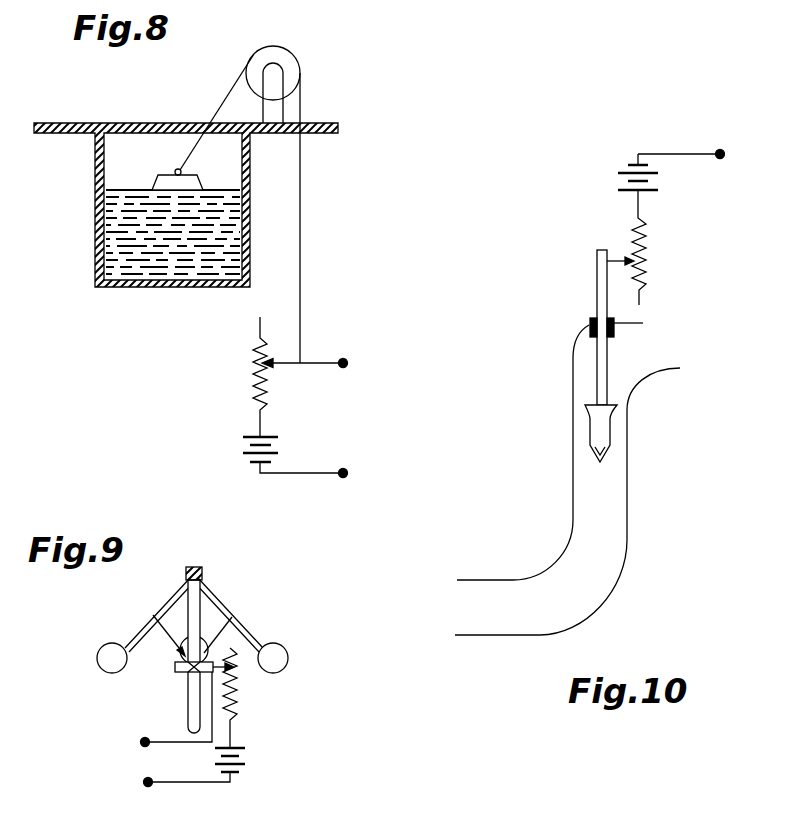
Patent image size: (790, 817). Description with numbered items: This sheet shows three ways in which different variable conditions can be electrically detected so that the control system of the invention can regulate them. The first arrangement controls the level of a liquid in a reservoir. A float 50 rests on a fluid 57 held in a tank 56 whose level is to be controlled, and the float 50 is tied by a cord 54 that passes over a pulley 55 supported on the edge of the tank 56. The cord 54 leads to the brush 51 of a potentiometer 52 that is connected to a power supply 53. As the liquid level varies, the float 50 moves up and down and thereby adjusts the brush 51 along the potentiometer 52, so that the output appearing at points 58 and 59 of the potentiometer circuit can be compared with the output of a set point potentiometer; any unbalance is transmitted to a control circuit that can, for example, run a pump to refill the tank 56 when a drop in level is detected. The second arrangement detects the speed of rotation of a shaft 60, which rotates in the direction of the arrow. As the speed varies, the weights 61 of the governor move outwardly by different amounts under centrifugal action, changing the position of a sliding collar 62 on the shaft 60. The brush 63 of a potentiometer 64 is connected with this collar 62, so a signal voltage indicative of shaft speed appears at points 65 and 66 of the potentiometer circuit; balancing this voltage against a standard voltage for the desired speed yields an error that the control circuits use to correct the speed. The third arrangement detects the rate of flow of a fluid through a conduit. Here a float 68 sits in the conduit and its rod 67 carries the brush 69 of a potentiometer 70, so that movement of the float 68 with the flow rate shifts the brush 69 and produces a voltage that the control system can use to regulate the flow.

In FIG. 8, the float 50 is at (164, 172).
In FIG. 8, the brush 51 is at (313, 363).
In FIG. 8, the potentiometer 52 is at (258, 362).
In FIG. 8, the power supply 53 is at (249, 446).
In FIG. 8, the cord 54 is at (301, 207).
In FIG. 8, the pulley 55 is at (289, 50).
In FIG. 8, the tank 56 is at (95, 180).
In FIG. 8, the fluid 57 is at (145, 265).
In FIG. 8, the point 58 is at (345, 361).
In FIG. 8, the point 59 is at (344, 472).
In FIG. 9, the shaft 60 is at (186, 700).
In FIG. 9, the weights 61 is at (100, 650).
In FIG. 9, the sliding collar 62 is at (176, 668).
In FIG. 9, the brush 63 is at (215, 662).
In FIG. 9, the potentiometer 64 is at (234, 690).
In FIG. 9, the point 65 is at (144, 741).
In FIG. 9, the point 66 is at (147, 783).
In FIG. 10, the rod 67 is at (597, 292).
In FIG. 10, the float 68 is at (590, 430).
In FIG. 10, the brush 69 is at (612, 258).
In FIG. 10, the potentiometer 70 is at (641, 252).